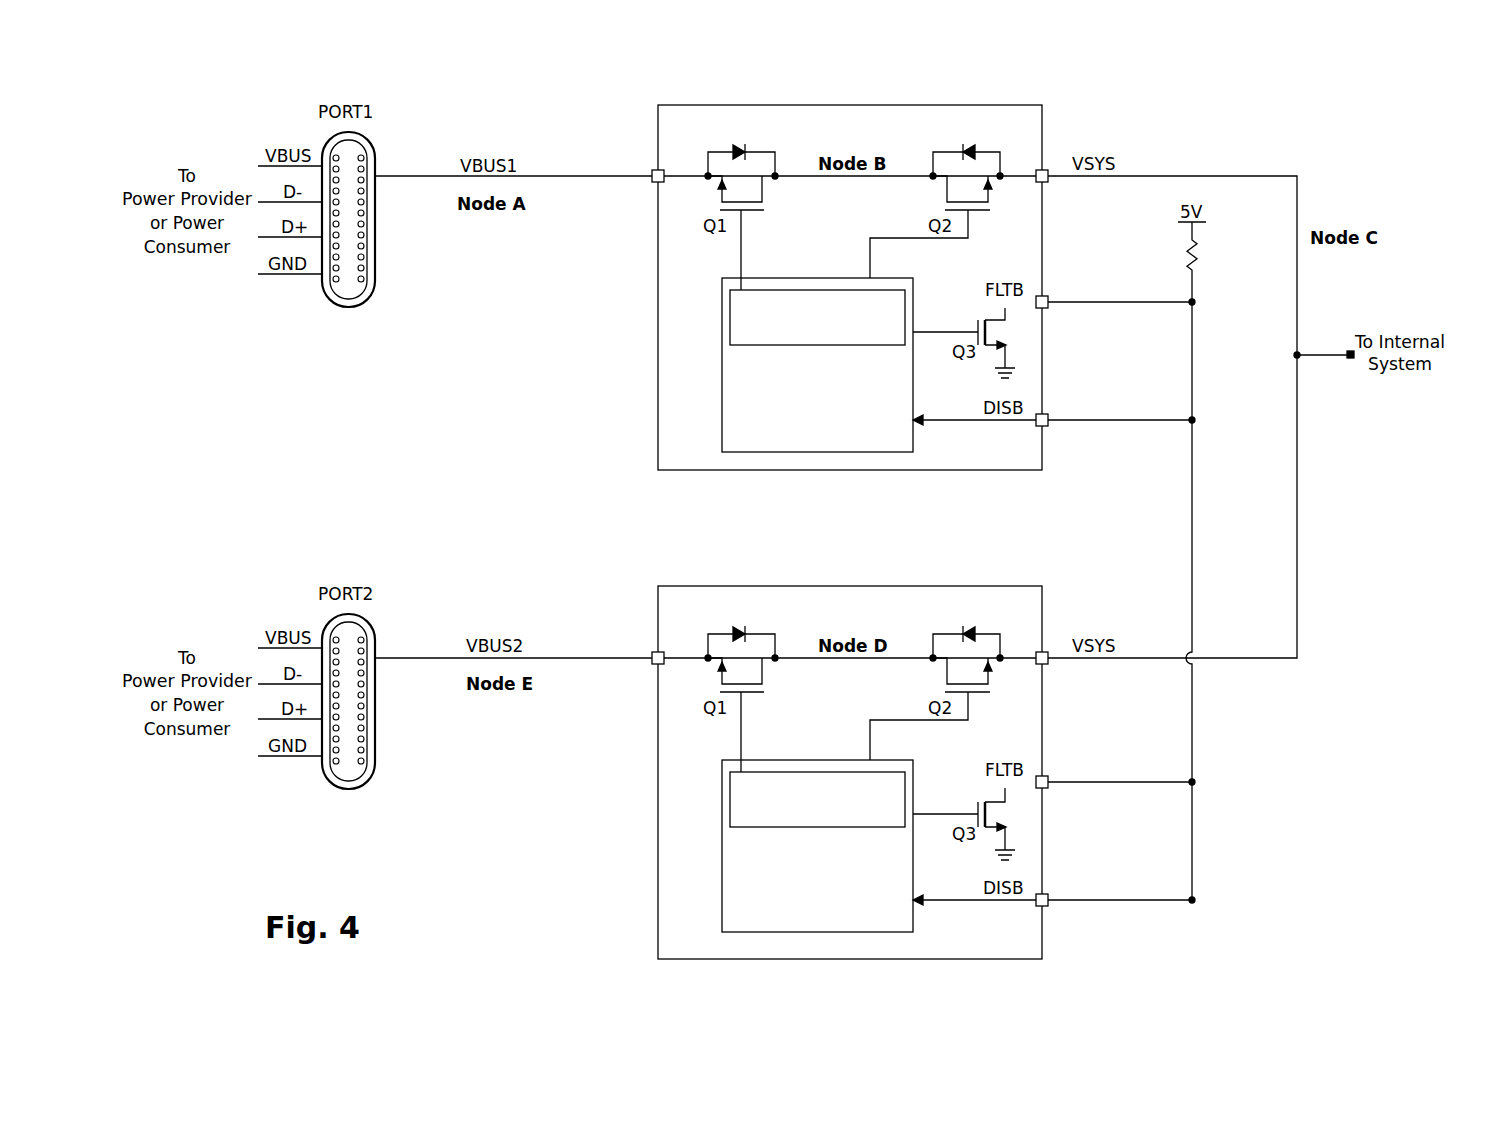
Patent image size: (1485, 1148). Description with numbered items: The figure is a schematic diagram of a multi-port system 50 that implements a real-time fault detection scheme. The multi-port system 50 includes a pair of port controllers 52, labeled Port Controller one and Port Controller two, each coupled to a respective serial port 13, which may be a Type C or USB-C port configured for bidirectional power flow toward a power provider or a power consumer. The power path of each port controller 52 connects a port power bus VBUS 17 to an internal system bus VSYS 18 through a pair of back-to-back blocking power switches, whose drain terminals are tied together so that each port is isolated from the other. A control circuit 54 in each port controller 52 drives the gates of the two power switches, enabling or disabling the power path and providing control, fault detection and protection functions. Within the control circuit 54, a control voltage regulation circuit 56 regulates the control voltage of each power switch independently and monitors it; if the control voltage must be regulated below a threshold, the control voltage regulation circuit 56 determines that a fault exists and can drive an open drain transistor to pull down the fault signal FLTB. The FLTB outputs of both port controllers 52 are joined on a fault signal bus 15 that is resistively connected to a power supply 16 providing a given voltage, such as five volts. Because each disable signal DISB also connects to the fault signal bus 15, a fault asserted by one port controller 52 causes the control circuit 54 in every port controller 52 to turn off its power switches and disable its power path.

The serial port 13 is at (368, 300).
The fault signal bus 15 is at (1119, 302).
The power supply 16 is at (1201, 225).
The port power bus VBUS 17 is at (598, 176).
The internal system bus VSYS 18 is at (1205, 176).
The multi-port system 50 is at (1316, 73).
The port controller 52 is at (1017, 105).
The control circuit 54 is at (817, 605).
The control voltage regulation circuit 56 is at (730, 314).